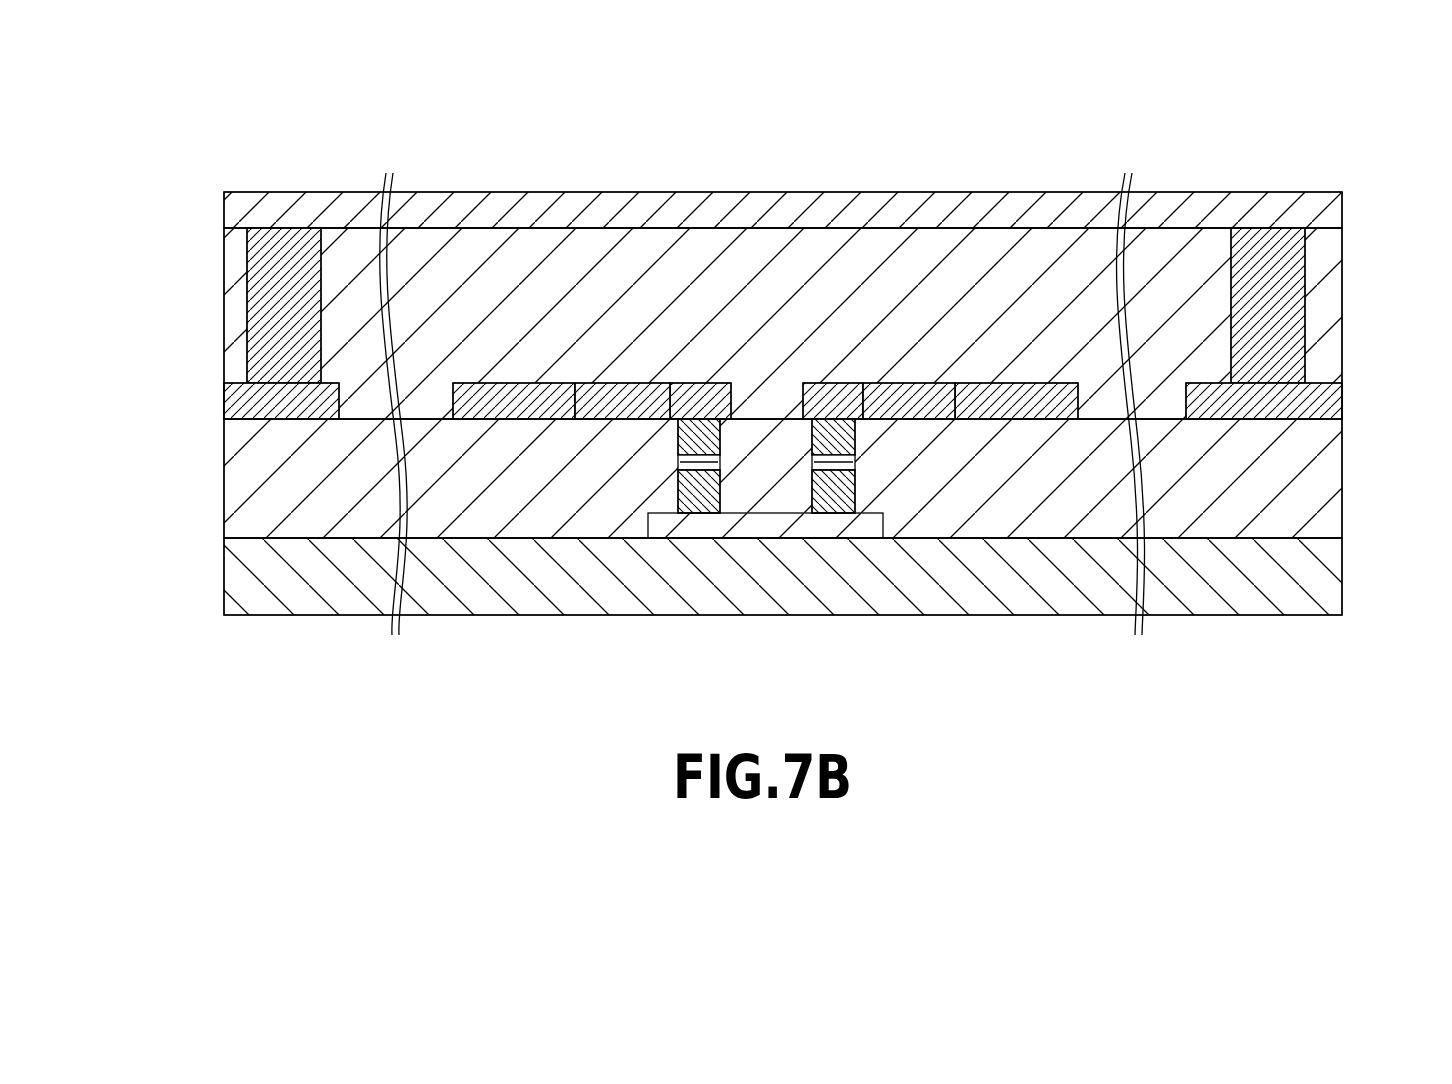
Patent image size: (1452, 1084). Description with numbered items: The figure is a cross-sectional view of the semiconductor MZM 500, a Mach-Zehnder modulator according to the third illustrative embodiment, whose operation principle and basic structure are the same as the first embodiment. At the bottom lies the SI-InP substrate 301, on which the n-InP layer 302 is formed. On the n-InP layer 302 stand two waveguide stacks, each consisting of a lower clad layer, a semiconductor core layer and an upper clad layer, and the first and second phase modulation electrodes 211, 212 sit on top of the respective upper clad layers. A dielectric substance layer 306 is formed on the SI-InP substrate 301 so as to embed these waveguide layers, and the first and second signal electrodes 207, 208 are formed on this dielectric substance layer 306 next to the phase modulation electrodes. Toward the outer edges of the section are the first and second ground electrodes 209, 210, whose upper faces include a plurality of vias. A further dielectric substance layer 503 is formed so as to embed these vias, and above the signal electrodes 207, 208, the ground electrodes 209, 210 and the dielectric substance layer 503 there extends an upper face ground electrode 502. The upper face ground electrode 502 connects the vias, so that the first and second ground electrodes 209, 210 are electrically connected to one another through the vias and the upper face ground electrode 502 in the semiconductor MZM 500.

The semiconductor MZM 500 is at (1352, 142).
The upper face ground electrode 502 is at (1185, 212).
The dielectric substance layer 503 is at (1082, 242).
The first signal electrode 207 is at (1013, 395).
The second signal electrode 208 is at (520, 395).
The first ground electrode 209 is at (1330, 400).
The second ground electrode 210 is at (232, 409).
The first phase modulation electrode 211 is at (835, 395).
The second phase modulation electrode 212 is at (700, 395).
The SI-InP substrate 301 is at (1325, 585).
The n-InP layer 302 is at (763, 527).
The dielectric substance layer 306 is at (1333, 478).